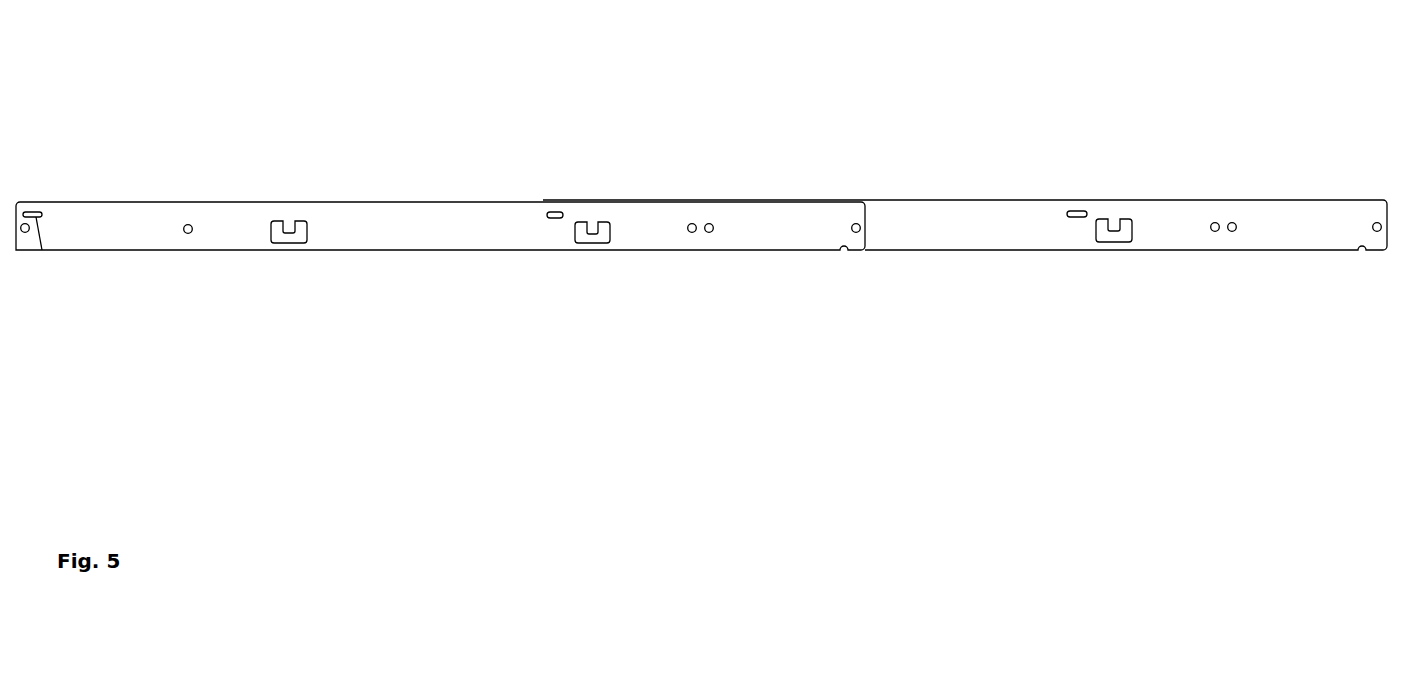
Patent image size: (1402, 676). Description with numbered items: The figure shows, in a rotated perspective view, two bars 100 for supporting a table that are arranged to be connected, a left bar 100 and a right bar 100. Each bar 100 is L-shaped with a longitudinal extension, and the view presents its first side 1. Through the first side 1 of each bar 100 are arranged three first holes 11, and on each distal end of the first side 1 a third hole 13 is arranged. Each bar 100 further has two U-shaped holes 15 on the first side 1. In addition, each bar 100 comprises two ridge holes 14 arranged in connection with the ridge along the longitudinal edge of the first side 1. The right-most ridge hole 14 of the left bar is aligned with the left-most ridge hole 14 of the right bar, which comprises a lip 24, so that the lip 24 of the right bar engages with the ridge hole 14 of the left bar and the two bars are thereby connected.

The bar 100 is at (226, 130).
The first side 1 is at (440, 228).
The first holes 11 is at (188, 233).
The third hole 13 is at (25, 233).
The ridge holes 14 is at (34, 212).
The U-shaped holes 15 is at (299, 244).
The lip 24 is at (36, 217).